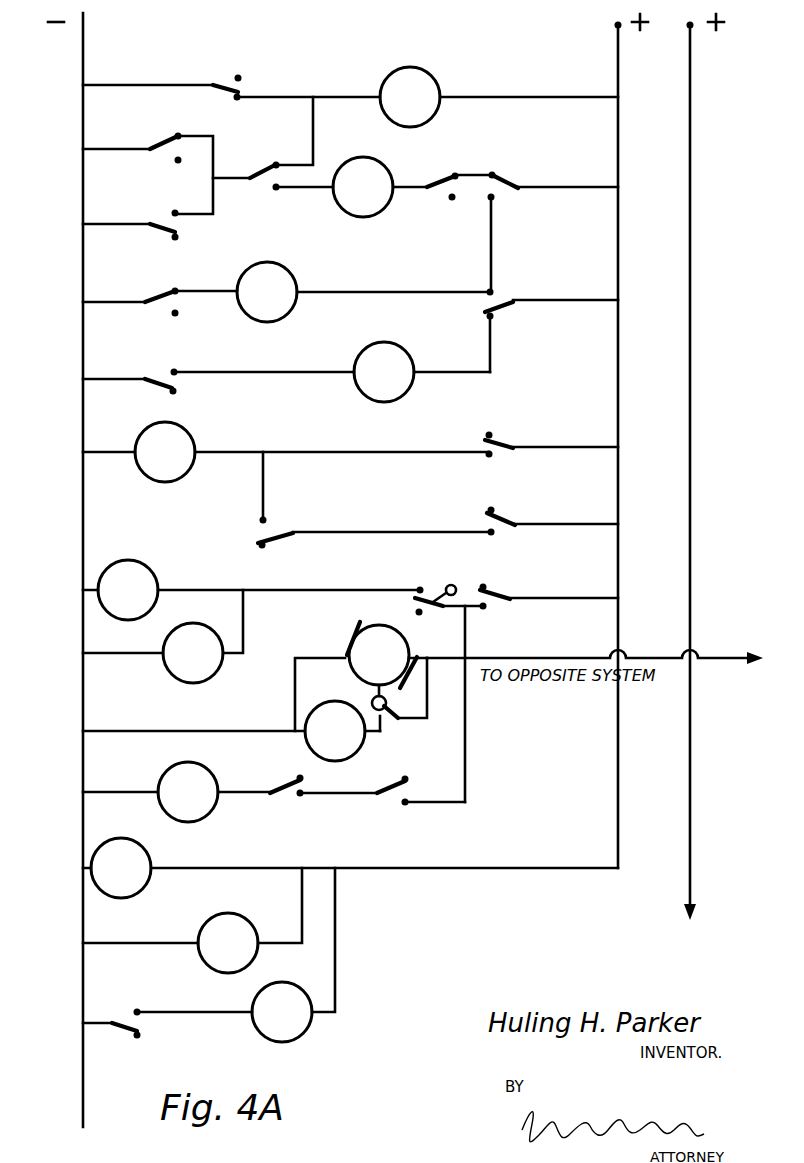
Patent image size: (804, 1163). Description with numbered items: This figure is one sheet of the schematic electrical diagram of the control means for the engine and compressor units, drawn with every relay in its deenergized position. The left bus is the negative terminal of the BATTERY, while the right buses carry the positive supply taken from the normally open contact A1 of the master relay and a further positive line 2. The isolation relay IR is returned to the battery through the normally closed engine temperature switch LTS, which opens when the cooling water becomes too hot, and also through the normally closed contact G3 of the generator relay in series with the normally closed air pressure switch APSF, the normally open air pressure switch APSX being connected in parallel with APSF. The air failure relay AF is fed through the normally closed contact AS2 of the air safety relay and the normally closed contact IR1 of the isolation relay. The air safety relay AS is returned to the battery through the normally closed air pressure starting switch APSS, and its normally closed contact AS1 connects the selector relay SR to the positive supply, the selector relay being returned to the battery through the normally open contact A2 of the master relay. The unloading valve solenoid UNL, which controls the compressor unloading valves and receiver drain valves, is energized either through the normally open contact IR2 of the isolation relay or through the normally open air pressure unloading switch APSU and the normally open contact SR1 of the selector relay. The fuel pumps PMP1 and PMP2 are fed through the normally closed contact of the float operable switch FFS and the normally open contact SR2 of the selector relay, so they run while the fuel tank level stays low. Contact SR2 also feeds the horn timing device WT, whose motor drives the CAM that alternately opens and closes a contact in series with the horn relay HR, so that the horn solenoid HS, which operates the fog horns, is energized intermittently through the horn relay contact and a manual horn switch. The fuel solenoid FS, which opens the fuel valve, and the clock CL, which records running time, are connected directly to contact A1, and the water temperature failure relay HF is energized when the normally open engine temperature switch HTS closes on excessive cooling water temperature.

The battery BATTERY is at (115, 569).
The normally open contact of the master relay A A1 is at (602, 440).
The positive bus 2 is at (694, 473).
The engine temperature switch LTS is at (236, 88).
The isolation relay IR is at (434, 77).
The air pressure switch APSF is at (176, 138).
The air pressure switch APSX is at (174, 226).
The contact of the generator relay G G3 is at (268, 166).
The air failure relay AF is at (385, 212).
The normally closed contact of the air safety relay AS AS2 is at (440, 184).
The contact of the isolation relay IR IR1 is at (510, 185).
The air pressure starting switch APSS is at (172, 296).
The air safety relay AS is at (286, 260).
The normally closed contact of the air safety relay AS AS1 is at (506, 299).
The selector relay SR is at (392, 347).
The normally open contact of the master relay A A2 is at (160, 378).
The unloading valve solenoid UNL is at (192, 438).
The normally open contact of the isolation relay IR IR2 is at (504, 440).
The air pressure unloading switch APSU is at (284, 526).
The normally open contact of the selector relay SR SR1 is at (506, 514).
The electric pump PMP1 is at (132, 562).
The electric pump PMP2 is at (172, 678).
The float operable switch FFS is at (440, 592).
The normally open contact of the selector relay SR SR2 is at (508, 598).
The horn timing device WT is at (380, 630).
The cam CAM is at (370, 704).
The horn relay HR is at (364, 748).
The horn solenoid HS is at (160, 774).
The fuel solenoid FS is at (150, 845).
The clock CL is at (208, 918).
The water temperature failure relay HF is at (306, 1032).
The engine temperature switch HTS is at (128, 1016).